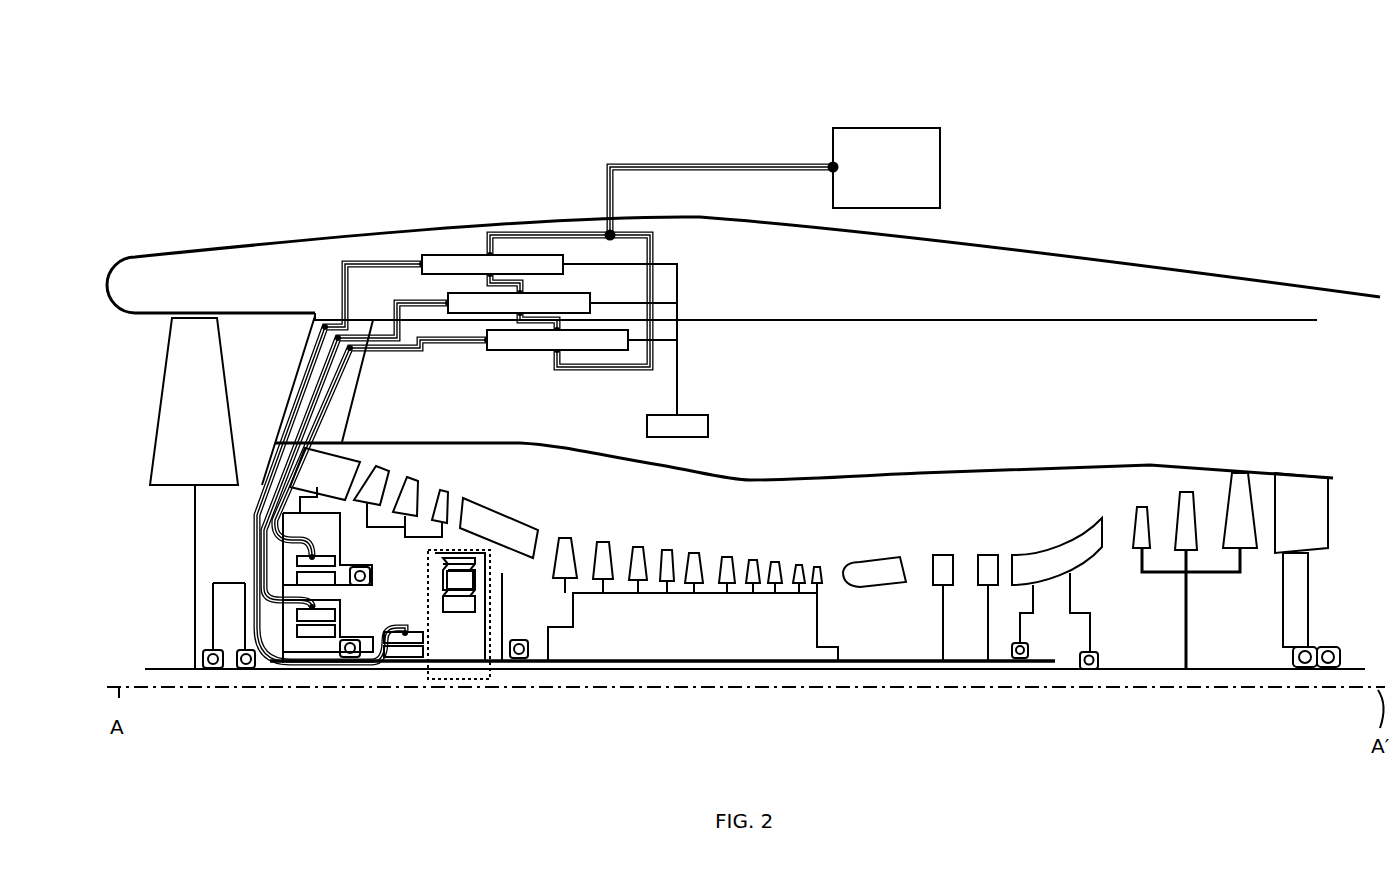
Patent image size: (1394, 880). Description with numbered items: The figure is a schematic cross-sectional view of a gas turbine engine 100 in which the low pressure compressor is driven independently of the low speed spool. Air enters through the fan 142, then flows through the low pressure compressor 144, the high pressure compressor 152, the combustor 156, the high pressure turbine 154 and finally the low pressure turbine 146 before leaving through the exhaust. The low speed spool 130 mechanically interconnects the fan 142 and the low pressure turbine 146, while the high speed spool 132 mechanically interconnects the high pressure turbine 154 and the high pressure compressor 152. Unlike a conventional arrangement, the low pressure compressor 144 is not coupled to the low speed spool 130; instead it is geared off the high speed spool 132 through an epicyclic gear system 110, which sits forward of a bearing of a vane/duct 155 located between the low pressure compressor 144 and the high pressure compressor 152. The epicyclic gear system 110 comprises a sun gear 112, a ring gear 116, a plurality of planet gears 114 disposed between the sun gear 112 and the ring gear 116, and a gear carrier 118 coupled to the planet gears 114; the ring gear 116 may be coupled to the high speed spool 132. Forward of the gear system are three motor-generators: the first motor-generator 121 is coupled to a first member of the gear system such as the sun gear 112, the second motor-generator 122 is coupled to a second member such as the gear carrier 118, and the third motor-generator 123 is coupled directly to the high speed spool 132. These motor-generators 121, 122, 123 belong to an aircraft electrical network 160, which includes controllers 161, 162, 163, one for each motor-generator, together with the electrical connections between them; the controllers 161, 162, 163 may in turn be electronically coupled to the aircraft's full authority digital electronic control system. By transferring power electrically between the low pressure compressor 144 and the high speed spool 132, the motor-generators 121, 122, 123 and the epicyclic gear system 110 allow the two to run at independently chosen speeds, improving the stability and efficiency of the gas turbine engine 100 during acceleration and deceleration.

The gas turbine engine 100 is at (157, 143).
The aircraft electrical network 160 is at (431, 186).
The controller 163 is at (443, 268).
The controller 161 is at (463, 305).
The controller 162 is at (500, 342).
The fan 142 is at (193, 402).
The low pressure compressor 144 is at (458, 488).
The vane/duct 155 is at (505, 525).
The ring gear 116 is at (457, 558).
The planet gears 114 is at (460, 583).
The gear carrier 118 is at (432, 585).
The sun gear 112 is at (463, 642).
The epicyclic gear system 110 is at (490, 683).
The second motor-generator 122 is at (290, 578).
The first motor-generator 121 is at (312, 644).
The third motor-generator 123 is at (400, 662).
The high pressure compressor 152 is at (835, 523).
The combustor 156 is at (873, 573).
The high pressure turbine 154 is at (1005, 541).
The low pressure turbine 146 is at (1247, 452).
The low speed spool 130 is at (567, 671).
The high speed spool 132 is at (630, 663).